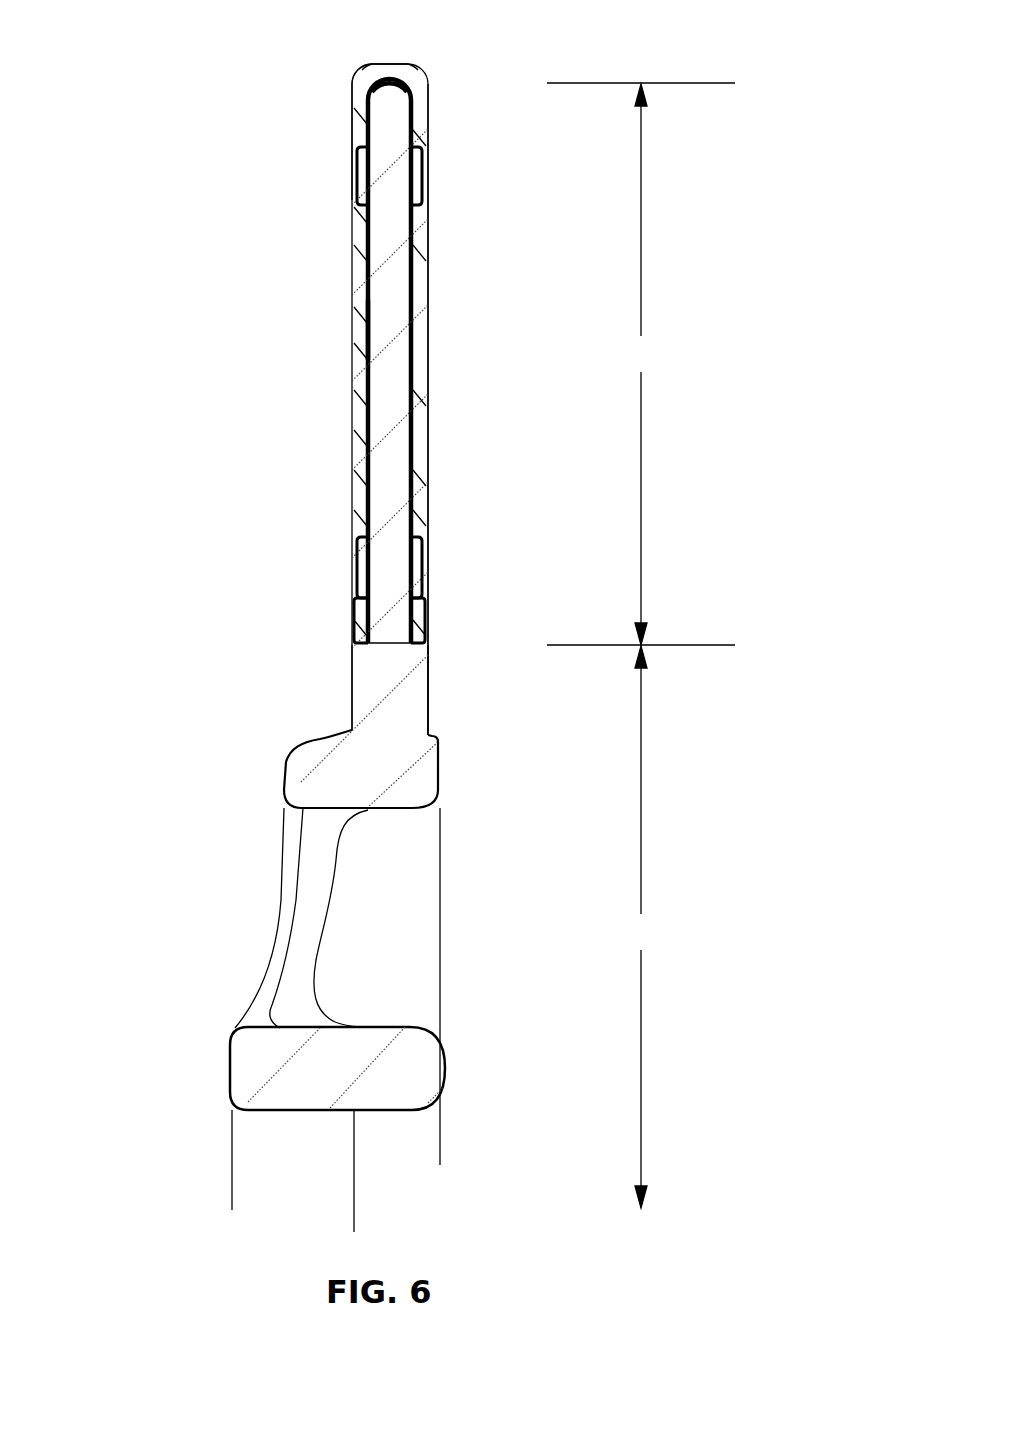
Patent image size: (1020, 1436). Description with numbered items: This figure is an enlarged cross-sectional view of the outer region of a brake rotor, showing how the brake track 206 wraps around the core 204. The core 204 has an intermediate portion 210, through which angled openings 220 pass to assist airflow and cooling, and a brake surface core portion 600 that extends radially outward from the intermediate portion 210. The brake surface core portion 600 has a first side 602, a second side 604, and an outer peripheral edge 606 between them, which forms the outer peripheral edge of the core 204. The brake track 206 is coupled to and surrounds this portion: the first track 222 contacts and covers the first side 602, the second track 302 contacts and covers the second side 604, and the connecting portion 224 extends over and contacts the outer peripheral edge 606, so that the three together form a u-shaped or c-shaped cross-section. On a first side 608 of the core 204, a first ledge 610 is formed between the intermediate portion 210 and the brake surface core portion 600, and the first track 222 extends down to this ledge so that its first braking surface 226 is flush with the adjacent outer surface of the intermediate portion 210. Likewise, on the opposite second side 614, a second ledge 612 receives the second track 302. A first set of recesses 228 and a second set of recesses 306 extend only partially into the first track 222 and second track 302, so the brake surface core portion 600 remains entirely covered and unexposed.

The core 204 is at (312, 760).
The brake track 206 is at (358, 128).
The intermediate portion 210 is at (643, 927).
The openings 220 is at (232, 908).
The first track 222 is at (419, 295).
The connecting portion 224 is at (408, 72).
The first braking surface 226 is at (430, 408).
The first set of recesses 228 is at (436, 176).
The second track 302 is at (357, 262).
The second set of recesses 306 is at (340, 176).
The brake surface core portion 600 is at (641, 364).
The first side 602 is at (413, 353).
The second side 604 is at (365, 330).
The outer peripheral edge 606 is at (385, 77).
The first side 608 is at (430, 710).
The first ledge 610 is at (420, 646).
The second ledge 612 is at (358, 643).
The second side 614 is at (352, 710).